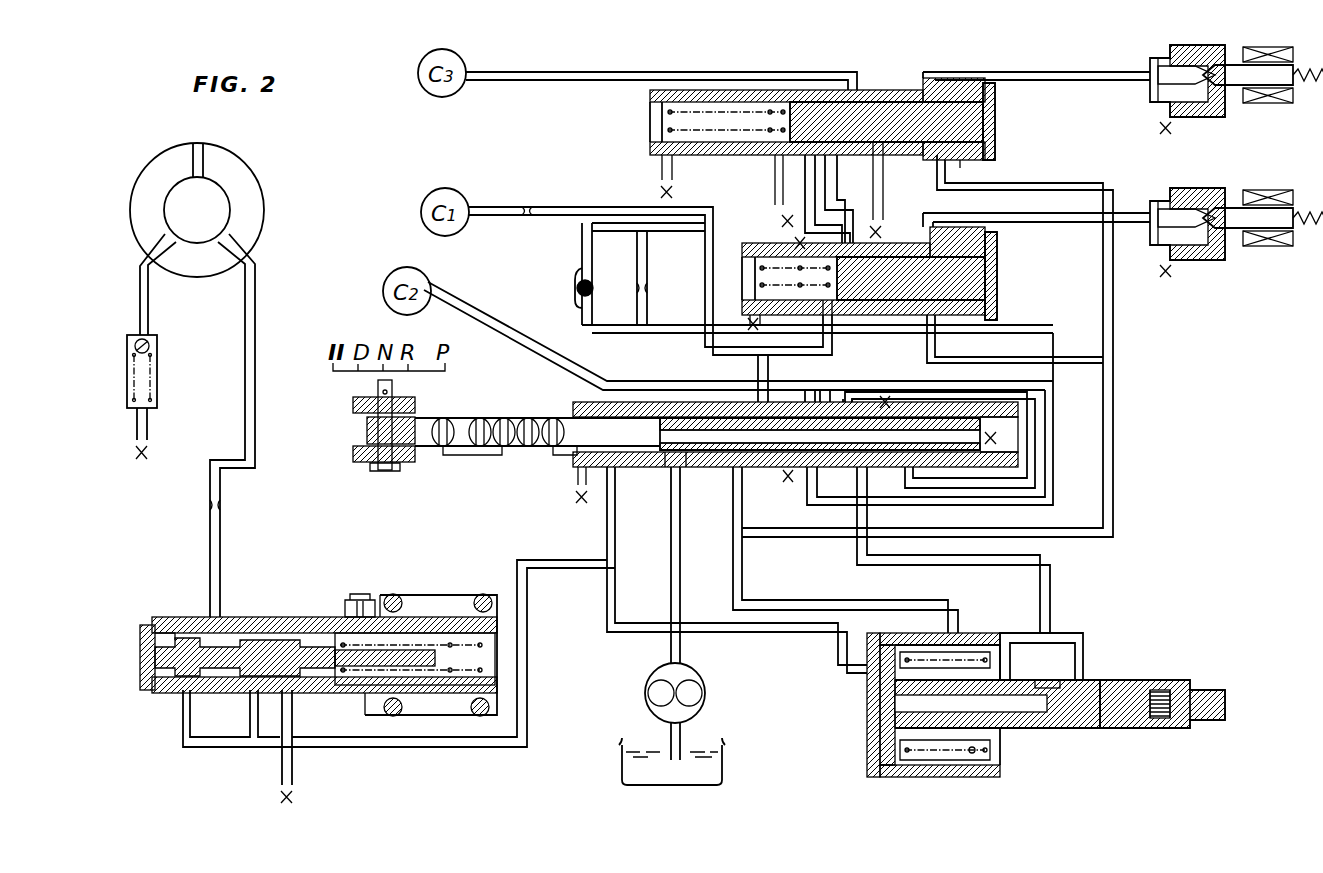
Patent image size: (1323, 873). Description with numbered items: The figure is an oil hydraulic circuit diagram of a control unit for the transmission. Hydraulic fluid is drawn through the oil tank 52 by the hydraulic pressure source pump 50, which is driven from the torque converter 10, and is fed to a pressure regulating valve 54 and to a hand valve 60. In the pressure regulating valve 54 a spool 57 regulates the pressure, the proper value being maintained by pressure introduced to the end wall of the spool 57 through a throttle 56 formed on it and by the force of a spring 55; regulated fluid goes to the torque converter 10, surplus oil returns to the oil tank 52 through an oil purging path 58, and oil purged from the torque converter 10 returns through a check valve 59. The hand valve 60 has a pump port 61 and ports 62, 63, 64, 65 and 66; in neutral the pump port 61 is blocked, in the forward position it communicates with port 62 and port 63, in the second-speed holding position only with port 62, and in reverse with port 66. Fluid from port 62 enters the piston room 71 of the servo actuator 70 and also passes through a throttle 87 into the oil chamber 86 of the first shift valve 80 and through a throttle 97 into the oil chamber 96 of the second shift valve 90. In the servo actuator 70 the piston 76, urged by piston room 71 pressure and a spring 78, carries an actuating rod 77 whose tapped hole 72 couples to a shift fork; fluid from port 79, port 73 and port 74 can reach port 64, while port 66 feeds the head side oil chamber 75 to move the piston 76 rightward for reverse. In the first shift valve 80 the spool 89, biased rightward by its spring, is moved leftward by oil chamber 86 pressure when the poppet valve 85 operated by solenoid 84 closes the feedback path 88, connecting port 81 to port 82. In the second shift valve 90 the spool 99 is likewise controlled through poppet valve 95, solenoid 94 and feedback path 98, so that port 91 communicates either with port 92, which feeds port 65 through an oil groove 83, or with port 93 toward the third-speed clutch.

The torque converter 10 is at (226, 163).
The hydraulic pressure source pump 50 is at (710, 682).
The oil tank 52 is at (735, 771).
The pressure regulating valve 54 is at (318, 641).
The spring 55 is at (345, 680).
The throttle 56 is at (175, 630).
The spool 57 is at (176, 678).
The oil purging path 58 is at (283, 767).
The check valve 59 is at (155, 357).
The hand valve 60 is at (547, 464).
The pump port 61 is at (668, 462).
The port 62 is at (732, 464).
The port 63 is at (760, 466).
The port 64 is at (866, 460).
The port 65 is at (910, 460).
The port 66 is at (622, 470).
The servo actuator 70 is at (1031, 713).
The piston room 71 is at (922, 760).
The tapped hole 72 is at (1160, 690).
The port 73 is at (1046, 700).
The port 74 is at (1062, 676).
The head side oil chamber 75 is at (882, 702).
The piston 76 is at (880, 752).
The actuating rod 77 is at (1120, 682).
The spring 78 is at (972, 754).
The port 79 is at (1004, 680).
The first shift valve 80 is at (931, 259).
The port 81 is at (818, 302).
The port 82 is at (850, 246).
The oil groove 83 is at (642, 270).
The solenoid 84 is at (1236, 221).
The poppet valve 85 is at (1238, 210).
The oil chamber 86 is at (960, 300).
The throttle 87 is at (924, 310).
The feedback path 88 is at (1035, 215).
The spool 89 is at (925, 284).
The second shift valve 90 is at (808, 298).
The port 91 is at (838, 150).
The port 92 is at (800, 152).
The port 93 is at (854, 95).
The solenoid 94 is at (1236, 90).
The poppet valve 95 is at (1236, 92).
The oil chamber 96 is at (975, 150).
The throttle 97 is at (938, 162).
The feedback path 98 is at (1102, 80).
The spool 99 is at (655, 118).